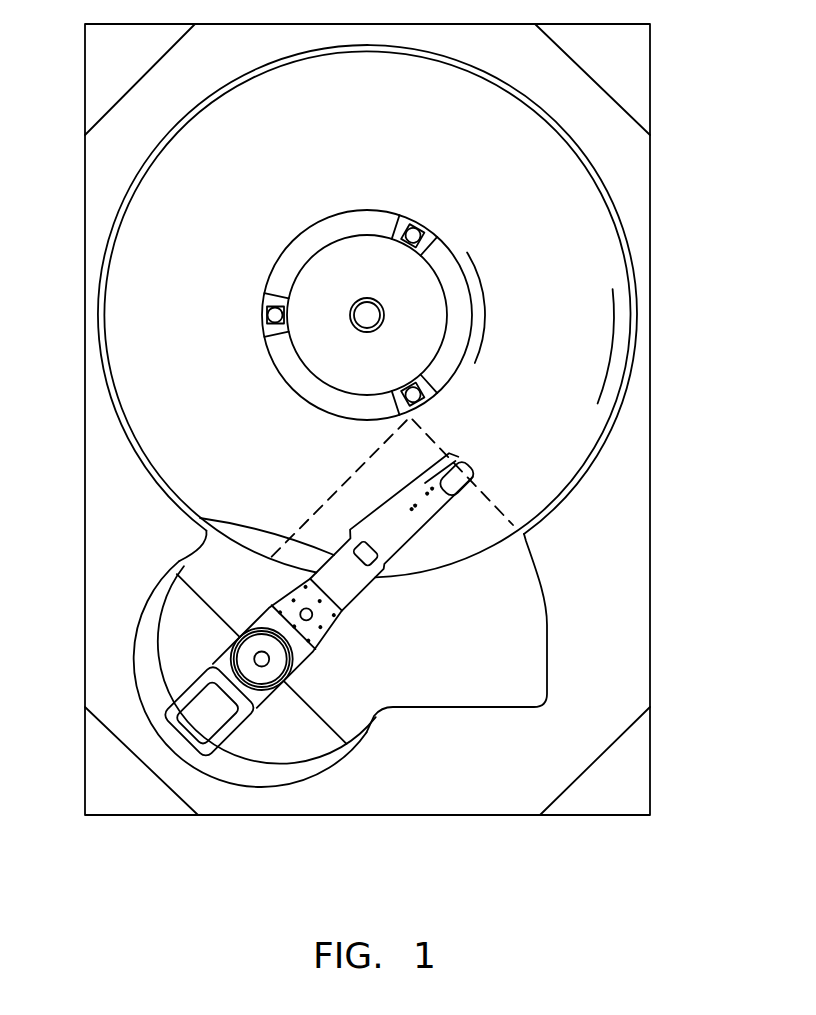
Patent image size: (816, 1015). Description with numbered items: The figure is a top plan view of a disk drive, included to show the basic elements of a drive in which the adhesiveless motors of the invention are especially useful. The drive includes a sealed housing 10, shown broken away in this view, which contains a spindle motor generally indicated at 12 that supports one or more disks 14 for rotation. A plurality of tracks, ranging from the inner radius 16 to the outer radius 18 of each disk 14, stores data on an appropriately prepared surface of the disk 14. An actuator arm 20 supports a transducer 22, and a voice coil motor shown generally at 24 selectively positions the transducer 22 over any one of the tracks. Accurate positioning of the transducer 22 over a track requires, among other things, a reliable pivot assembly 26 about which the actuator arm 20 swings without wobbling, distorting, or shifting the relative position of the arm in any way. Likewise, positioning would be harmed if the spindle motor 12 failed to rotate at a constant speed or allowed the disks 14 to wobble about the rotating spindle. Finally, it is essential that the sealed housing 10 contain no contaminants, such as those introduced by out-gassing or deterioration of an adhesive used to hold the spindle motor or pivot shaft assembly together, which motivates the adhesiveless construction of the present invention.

The housing 10 is at (652, 572).
The spindle motor 12 is at (367, 315).
The disk 14 is at (368, 315).
The inner radius 16 is at (474, 268).
The outer radius 18 is at (600, 348).
The actuator arm 20 is at (186, 516).
The transducer 22 is at (453, 458).
The voice coil motor 24 is at (288, 803).
The pivot assembly 26 is at (265, 660).